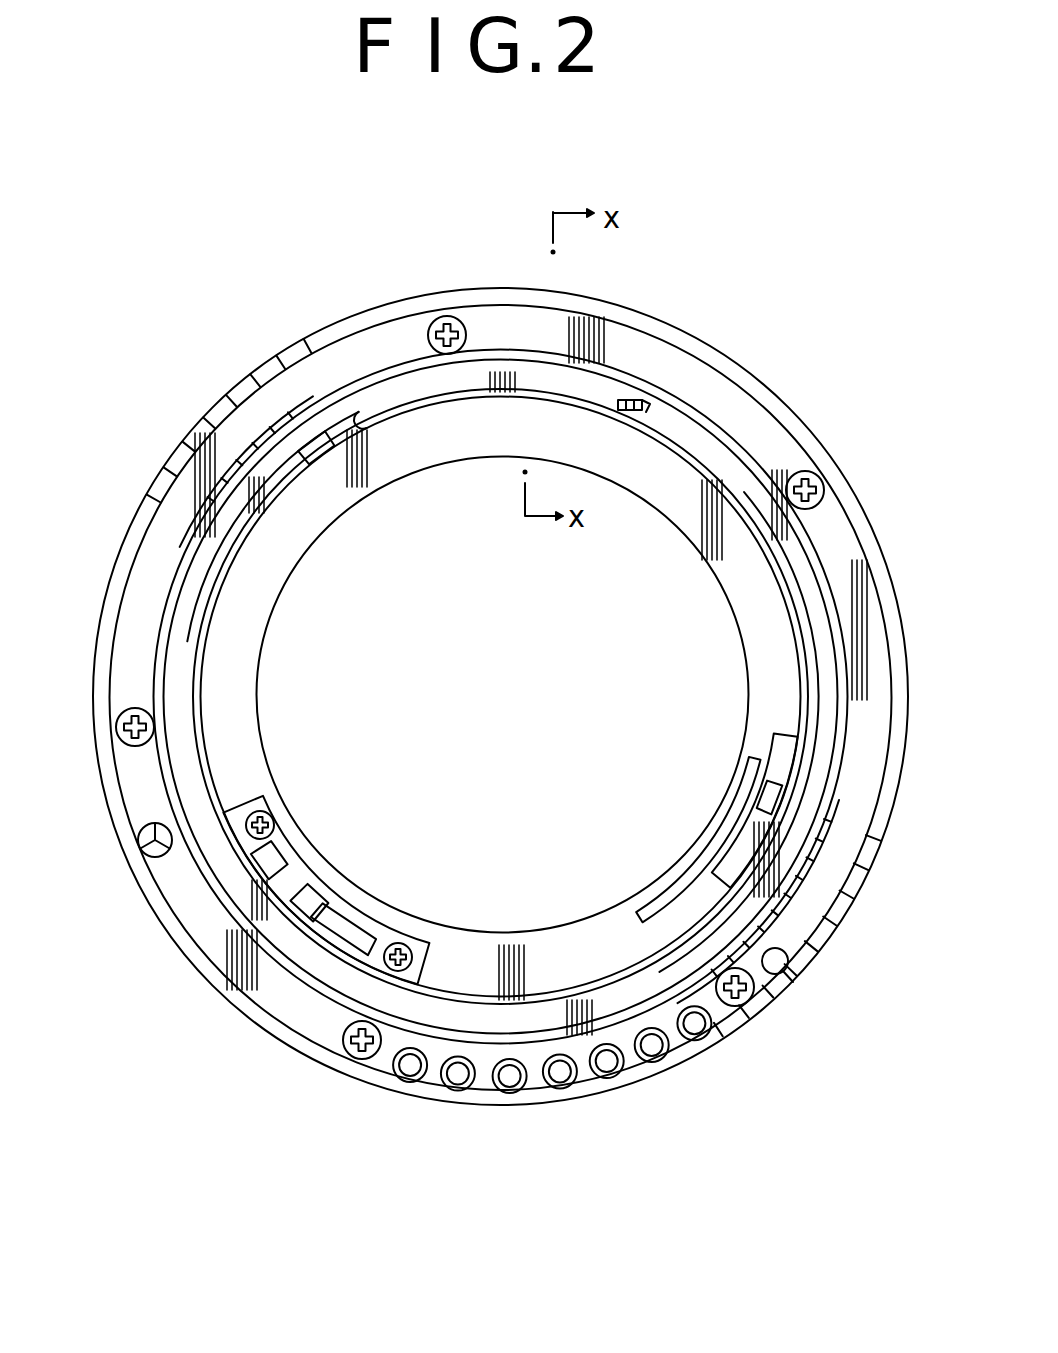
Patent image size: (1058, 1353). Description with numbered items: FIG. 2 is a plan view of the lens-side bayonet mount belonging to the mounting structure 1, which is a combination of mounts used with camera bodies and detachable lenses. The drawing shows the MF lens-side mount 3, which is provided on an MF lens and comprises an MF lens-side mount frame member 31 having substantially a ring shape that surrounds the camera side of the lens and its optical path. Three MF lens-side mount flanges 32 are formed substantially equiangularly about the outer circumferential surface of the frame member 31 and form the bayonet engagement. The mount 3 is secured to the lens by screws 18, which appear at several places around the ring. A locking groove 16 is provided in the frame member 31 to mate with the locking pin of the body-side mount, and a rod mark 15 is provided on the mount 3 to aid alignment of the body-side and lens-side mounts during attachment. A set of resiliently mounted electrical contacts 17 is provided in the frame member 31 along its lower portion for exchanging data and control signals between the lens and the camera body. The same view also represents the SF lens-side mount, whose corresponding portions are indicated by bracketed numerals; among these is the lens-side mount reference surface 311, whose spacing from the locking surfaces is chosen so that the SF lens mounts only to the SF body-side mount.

The mounting structure 1 is at (595, 1224).
The MF lens-side mount 3 is at (738, 306).
The rod mark 15 is at (631, 397).
The locking groove 16 is at (789, 970).
The electrical contacts 17 is at (510, 1078).
The screws 18 is at (447, 316).
The MF lens-side mount frame member 31 is at (240, 432).
The lens-side mount reference surface 311 is at (358, 345).
The MF lens-side mount flanges 32 is at (452, 388).